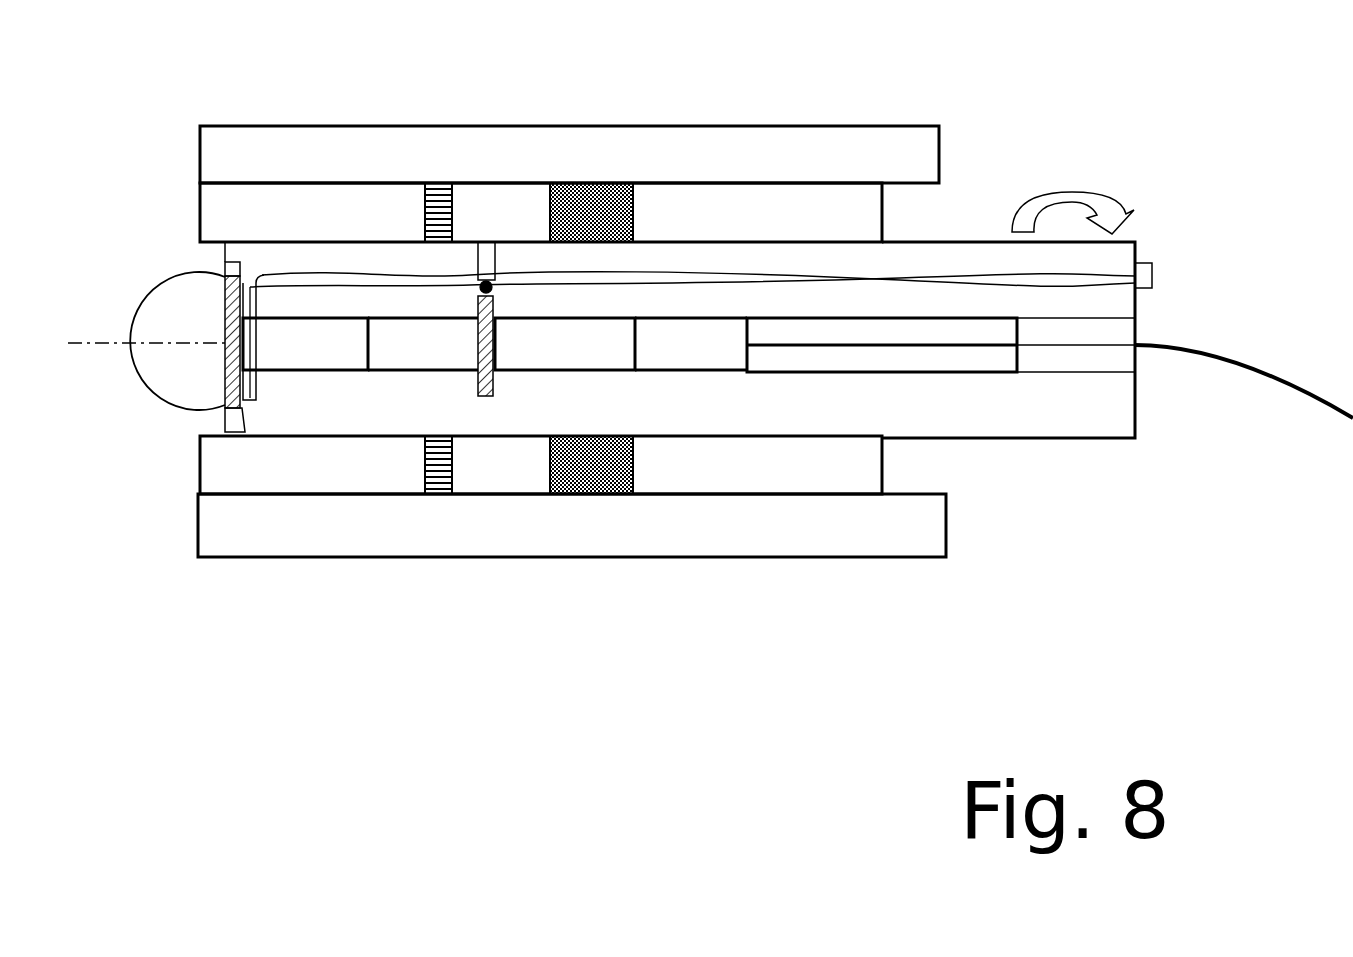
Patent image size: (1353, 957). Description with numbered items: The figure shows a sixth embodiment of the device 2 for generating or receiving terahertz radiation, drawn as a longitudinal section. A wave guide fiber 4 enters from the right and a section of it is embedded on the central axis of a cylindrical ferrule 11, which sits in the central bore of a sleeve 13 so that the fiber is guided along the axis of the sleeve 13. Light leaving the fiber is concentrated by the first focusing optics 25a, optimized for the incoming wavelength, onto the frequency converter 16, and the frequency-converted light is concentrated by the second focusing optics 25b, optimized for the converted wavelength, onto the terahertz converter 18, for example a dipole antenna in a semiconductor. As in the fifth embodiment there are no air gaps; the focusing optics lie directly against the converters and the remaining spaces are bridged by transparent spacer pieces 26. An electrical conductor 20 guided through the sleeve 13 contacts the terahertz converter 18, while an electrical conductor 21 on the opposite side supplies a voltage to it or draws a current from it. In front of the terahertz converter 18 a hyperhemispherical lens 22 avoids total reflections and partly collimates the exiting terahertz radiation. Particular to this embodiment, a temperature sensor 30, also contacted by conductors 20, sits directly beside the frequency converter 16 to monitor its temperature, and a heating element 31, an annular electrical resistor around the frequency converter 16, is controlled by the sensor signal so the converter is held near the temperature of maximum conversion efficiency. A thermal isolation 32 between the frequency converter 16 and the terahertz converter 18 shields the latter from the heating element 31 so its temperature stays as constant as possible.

The device 2 is at (287, 100).
The wave guide fiber 4 is at (1267, 372).
The ferrule 11 is at (1010, 357).
The sleeve 13 is at (962, 417).
The frequency converter 16 is at (497, 387).
The terahertz converter 18 is at (234, 403).
The electrical conductor 20 is at (915, 275).
The electrical conductor 21 is at (1156, 262).
The hyperhemispherical lens 22 is at (185, 401).
The first focusing optics 25a is at (588, 352).
The second focusing optics 25b is at (335, 363).
The transparent spacer piece 26 is at (687, 353).
The temperature sensor 30 is at (470, 287).
The heating element 31 is at (612, 452).
The thermal isolation 32 is at (447, 496).